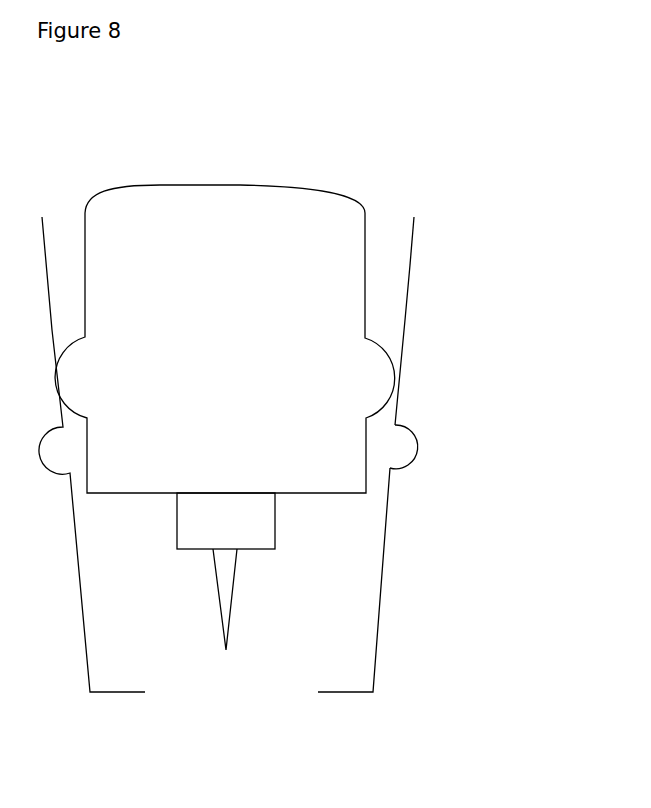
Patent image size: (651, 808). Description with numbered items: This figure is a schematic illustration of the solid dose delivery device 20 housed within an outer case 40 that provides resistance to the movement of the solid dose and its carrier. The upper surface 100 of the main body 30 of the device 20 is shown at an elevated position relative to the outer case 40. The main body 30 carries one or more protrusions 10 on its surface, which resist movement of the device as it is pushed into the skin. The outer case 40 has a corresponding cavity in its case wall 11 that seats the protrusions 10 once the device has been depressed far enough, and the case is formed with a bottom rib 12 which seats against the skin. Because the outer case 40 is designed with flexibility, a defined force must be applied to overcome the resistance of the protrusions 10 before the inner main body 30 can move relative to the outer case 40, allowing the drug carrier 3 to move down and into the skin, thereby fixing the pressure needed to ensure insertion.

The upper surface 100 is at (307, 180).
The protrusions 10 is at (58, 232).
The device 20 is at (428, 197).
The main body 30 is at (308, 298).
The outer case 40 is at (420, 259).
The case wall 11 is at (410, 476).
The bottom rib 12 is at (337, 698).
The drug carrier 3 is at (208, 627).